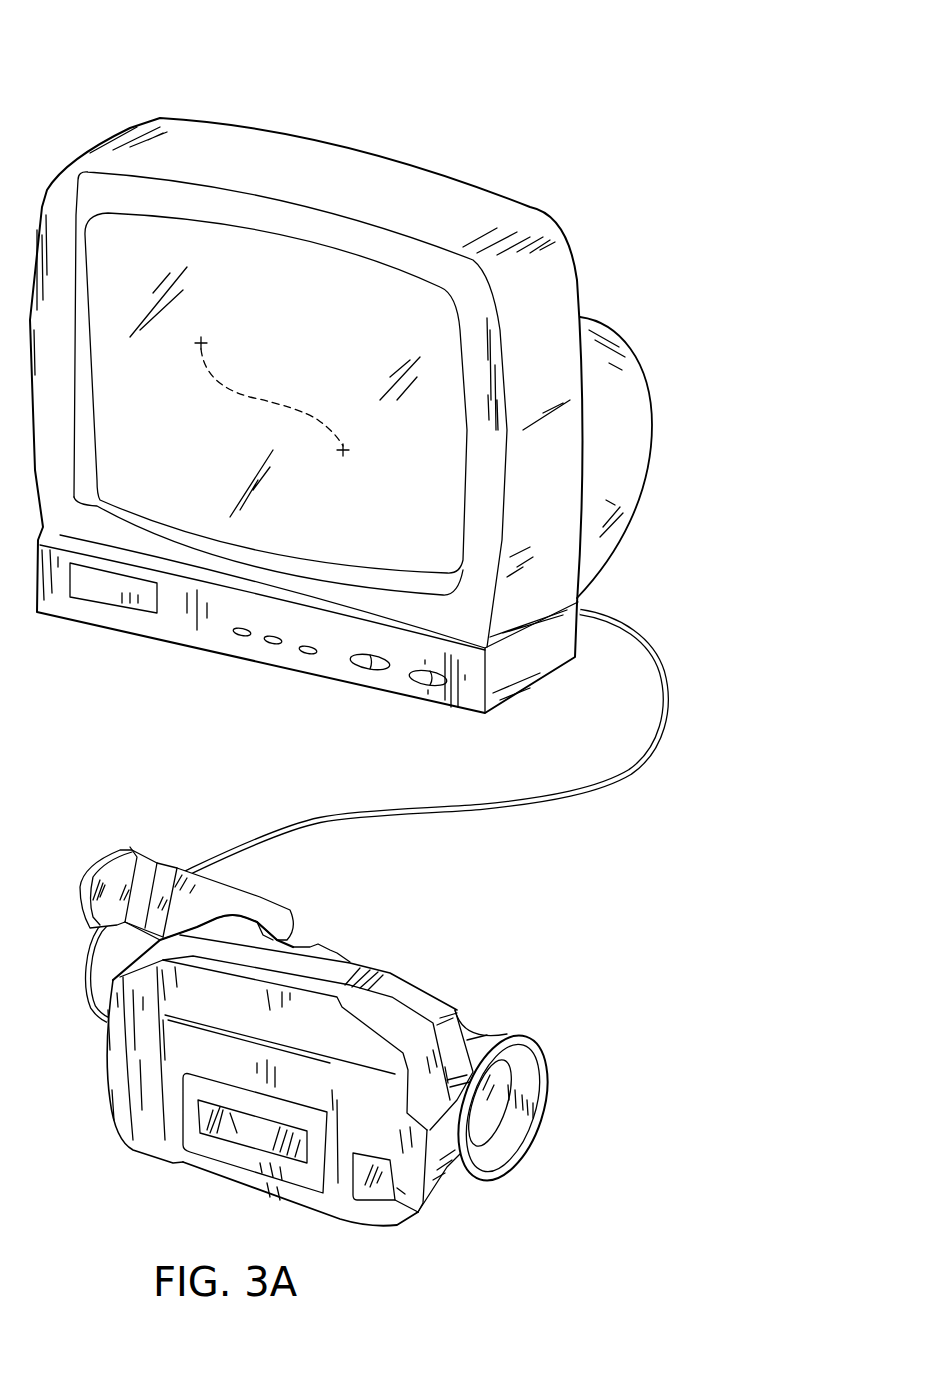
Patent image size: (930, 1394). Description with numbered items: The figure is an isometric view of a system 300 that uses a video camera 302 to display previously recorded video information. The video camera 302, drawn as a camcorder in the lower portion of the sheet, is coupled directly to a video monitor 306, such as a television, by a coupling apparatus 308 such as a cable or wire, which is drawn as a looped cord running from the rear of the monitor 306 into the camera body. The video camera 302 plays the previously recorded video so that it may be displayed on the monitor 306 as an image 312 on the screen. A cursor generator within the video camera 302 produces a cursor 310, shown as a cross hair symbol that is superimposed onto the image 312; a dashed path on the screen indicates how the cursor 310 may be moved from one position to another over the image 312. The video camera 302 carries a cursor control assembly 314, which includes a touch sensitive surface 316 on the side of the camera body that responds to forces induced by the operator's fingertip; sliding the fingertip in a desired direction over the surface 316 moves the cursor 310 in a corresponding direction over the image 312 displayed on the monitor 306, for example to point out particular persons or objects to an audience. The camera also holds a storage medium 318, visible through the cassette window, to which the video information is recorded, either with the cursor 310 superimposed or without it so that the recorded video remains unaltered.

The system 300 is at (383, 92).
The video camera 302 is at (417, 1000).
The video monitor 306 is at (432, 198).
The coupling apparatus 308 is at (565, 797).
The cursor 310 is at (343, 456).
The image 312 is at (358, 318).
The cursor control assembly 314 is at (397, 1197).
The touch sensitive surface 316 is at (372, 1197).
The storage medium 318 is at (220, 1123).